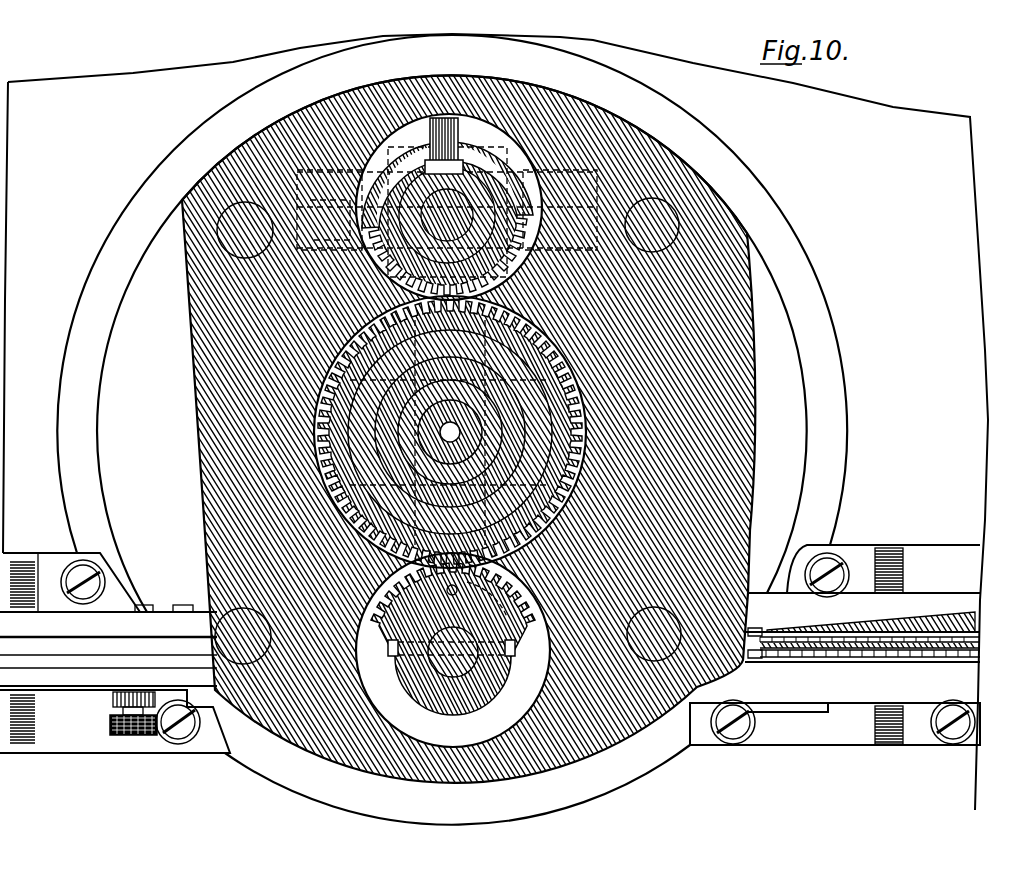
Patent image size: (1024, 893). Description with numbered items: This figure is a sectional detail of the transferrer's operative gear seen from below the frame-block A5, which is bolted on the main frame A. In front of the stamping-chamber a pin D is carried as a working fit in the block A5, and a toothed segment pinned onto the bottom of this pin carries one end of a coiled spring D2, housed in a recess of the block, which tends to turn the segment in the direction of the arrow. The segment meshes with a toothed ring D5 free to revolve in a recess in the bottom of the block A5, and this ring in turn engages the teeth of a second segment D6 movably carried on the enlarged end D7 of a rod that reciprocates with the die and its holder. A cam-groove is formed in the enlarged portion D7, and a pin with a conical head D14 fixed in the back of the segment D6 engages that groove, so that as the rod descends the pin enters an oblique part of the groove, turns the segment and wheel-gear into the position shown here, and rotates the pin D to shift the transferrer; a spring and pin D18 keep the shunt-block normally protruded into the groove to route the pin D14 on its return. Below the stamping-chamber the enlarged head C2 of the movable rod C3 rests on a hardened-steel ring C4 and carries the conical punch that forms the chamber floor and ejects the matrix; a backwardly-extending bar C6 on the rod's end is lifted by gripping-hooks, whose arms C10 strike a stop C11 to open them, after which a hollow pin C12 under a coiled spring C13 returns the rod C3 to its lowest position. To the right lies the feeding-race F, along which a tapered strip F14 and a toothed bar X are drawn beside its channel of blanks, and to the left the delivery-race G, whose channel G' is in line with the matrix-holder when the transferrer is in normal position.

The frame A is at (280, 773).
The frame-block A5 is at (200, 480).
The enlarged head C2 is at (218, 698).
The movable rod C3 is at (313, 417).
The hardened-steel ring C4 is at (330, 353).
The backwardly-extending bar C6 is at (560, 350).
The arm C10 is at (300, 246).
The stop C11 is at (223, 177).
The hollow pin C12 is at (360, 300).
The coiled spring C13 is at (480, 330).
The pin D is at (398, 657).
The coiled spring D2 is at (510, 625).
The toothed ring D5 is at (310, 388).
The second segment D6 is at (330, 133).
The enlarged end D7 is at (283, 130).
The conical-headed pin D14 is at (436, 125).
The pin D18 is at (520, 125).
The feeding-race F is at (867, 693).
The wedge strip F14 is at (852, 613).
The rack X is at (867, 655).
The delivery-race G is at (115, 653).
The channel G' is at (115, 696).